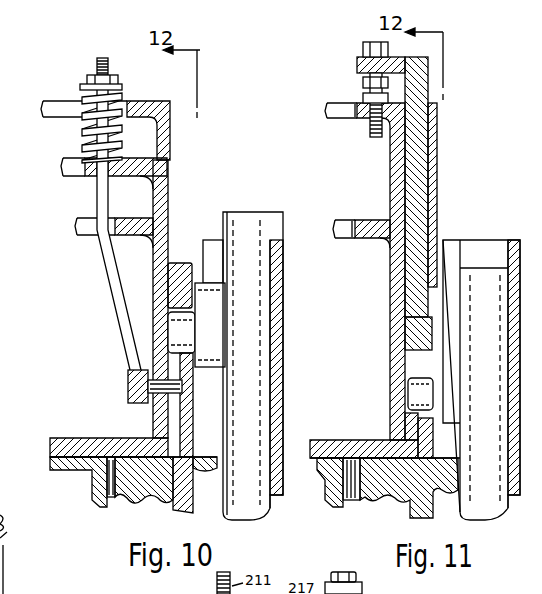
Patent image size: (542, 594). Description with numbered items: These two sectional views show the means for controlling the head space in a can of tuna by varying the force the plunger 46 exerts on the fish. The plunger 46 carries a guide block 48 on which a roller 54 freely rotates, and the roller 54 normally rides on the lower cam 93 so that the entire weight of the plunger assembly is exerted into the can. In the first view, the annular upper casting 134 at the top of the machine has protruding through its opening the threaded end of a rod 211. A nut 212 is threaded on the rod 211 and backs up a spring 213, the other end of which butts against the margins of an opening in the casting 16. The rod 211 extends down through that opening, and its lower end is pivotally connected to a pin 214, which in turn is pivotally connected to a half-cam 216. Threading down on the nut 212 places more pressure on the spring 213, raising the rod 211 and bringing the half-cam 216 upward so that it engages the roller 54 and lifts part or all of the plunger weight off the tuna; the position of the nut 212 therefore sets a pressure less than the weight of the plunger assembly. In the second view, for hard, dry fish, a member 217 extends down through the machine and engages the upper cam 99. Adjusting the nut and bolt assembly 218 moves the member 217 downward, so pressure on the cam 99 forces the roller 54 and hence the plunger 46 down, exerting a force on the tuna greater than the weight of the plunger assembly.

In FIG. 10, the casting 16 is at (172, 199).
In FIG. 11, the casting 16 is at (400, 196).
In FIG. 10, the plunger 46 is at (266, 341).
In FIG. 11, the plunger 46 is at (481, 380).
In FIG. 10, the guide block 48 is at (218, 311).
In FIG. 10, the roller 54 is at (190, 343).
In FIG. 11, the roller 54 is at (420, 394).
In FIG. 10, the lower cam 93 is at (187, 418).
In FIG. 10, the upper cam 99 is at (171, 264).
In FIG. 11, the upper cam 99 is at (423, 341).
In FIG. 10, the upper casting 134 is at (131, 108).
In FIG. 11, the upper casting 134 is at (403, 140).
In FIG. 10, the rod 211 is at (95, 60).
In FIG. 10, the nut 212 is at (118, 80).
In FIG. 10, the spring 213 is at (83, 143).
In FIG. 10, the pin 214 is at (128, 393).
In FIG. 10, the half-cam 216 is at (178, 378).
In FIG. 11, the member 217 is at (425, 226).
In FIG. 11, the nut and bolt assembly 218 is at (355, 88).